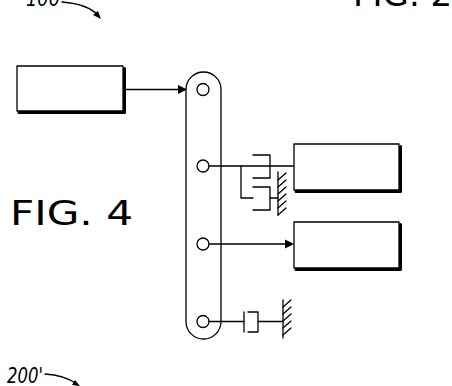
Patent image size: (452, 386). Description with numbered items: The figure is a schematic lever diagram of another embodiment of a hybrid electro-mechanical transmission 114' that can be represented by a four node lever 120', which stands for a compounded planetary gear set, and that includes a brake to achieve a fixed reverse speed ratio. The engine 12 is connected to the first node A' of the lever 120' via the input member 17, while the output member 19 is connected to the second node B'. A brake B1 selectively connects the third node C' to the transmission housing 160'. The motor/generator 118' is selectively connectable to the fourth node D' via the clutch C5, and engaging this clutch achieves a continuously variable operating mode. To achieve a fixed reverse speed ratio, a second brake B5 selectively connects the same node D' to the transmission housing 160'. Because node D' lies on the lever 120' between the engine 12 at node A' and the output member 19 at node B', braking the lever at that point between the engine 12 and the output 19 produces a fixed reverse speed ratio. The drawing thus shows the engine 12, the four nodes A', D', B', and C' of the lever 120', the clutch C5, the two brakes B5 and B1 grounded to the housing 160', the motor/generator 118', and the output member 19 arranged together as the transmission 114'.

The engine 12 is at (70, 66).
The input member 17 is at (156, 89).
The transmission 114' is at (255, 202).
The four node lever 120' is at (180, 179).
The first node A' is at (184, 107).
The fourth node D' is at (185, 184).
The second node B' is at (185, 262).
The third node C' is at (185, 340).
The clutch C5 is at (262, 140).
The brake B5 is at (262, 225).
The brake B1 is at (249, 346).
The transmission housing 160' is at (324, 270).
The motor/generator 118' is at (353, 150).
The output member 19 is at (346, 269).